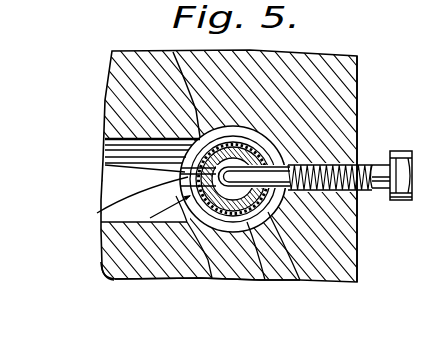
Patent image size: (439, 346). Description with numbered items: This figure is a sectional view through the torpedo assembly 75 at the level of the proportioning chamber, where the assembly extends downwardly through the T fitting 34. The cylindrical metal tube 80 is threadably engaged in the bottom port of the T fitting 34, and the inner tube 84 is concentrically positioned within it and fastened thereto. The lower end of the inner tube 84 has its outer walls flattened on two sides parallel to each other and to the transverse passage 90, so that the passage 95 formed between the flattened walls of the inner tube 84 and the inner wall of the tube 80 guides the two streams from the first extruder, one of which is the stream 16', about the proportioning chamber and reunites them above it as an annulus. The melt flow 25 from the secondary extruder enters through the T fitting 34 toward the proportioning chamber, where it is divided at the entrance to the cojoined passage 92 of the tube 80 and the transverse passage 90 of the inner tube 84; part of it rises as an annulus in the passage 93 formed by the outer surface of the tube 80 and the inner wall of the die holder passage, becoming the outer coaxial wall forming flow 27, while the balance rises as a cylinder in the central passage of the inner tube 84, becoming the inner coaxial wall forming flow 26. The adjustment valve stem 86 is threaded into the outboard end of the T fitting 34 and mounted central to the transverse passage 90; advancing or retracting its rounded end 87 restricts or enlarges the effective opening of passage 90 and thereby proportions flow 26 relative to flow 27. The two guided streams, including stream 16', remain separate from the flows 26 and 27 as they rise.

The T fitting 34 is at (328, 62).
The passage 95 is at (173, 54).
The rounded end 87 is at (237, 165).
The cylindrical metal tube 80 is at (272, 147).
The inner tube 84 is at (358, 125).
The stream 16' is at (127, 124).
The inner coaxial wall forming flow 26 is at (107, 165).
The melt flow 25 is at (108, 192).
The passage 92 is at (98, 213).
The torpedo assembly 75 is at (102, 272).
The transverse passage 90 is at (172, 278).
The outer coaxial wall forming flow 27 is at (222, 232).
The annular passage 93 is at (300, 281).
The adjustment valve stem 86 is at (403, 200).